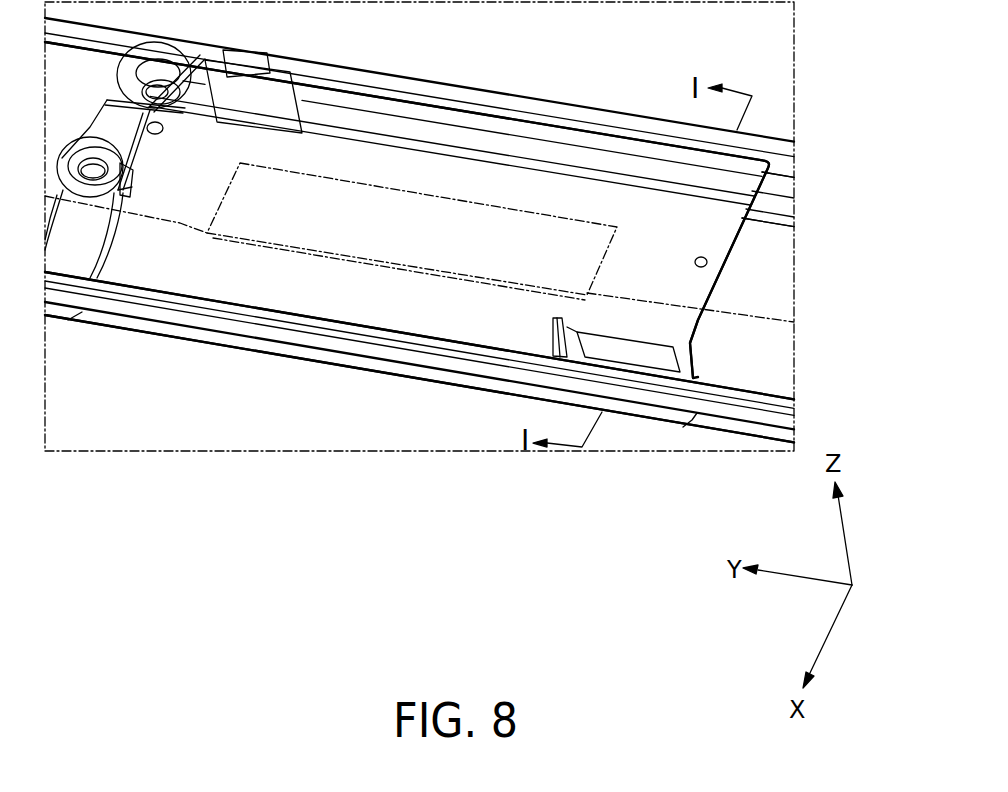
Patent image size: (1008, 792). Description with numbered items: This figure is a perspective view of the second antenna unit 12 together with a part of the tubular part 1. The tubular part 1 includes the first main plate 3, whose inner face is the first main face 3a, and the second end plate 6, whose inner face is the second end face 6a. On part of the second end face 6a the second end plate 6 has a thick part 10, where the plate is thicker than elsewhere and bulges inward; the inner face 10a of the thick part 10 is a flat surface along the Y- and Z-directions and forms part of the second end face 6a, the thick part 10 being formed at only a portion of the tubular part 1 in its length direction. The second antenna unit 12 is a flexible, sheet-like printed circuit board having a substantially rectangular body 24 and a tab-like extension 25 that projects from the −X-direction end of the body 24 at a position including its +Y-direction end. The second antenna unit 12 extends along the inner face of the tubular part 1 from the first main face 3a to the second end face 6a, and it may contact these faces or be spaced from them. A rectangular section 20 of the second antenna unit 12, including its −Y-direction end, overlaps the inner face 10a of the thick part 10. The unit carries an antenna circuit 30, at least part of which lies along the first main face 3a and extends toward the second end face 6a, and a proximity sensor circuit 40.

The tubular part 1 is at (577, 106).
The first main plate 3 is at (757, 281).
The first main face 3a is at (768, 199).
The second end plate 6 is at (755, 353).
The second end face 6a is at (419, 357).
The thick part 10 is at (645, 356).
The inner face of the thick part 10a is at (407, 210).
The second antenna unit 12 is at (742, 246).
The rectangular section 20 is at (553, 323).
The body 24 is at (680, 278).
The extension 25 is at (241, 112).
The antenna circuit 30 is at (497, 205).
The proximity sensor circuit 40 is at (599, 348).